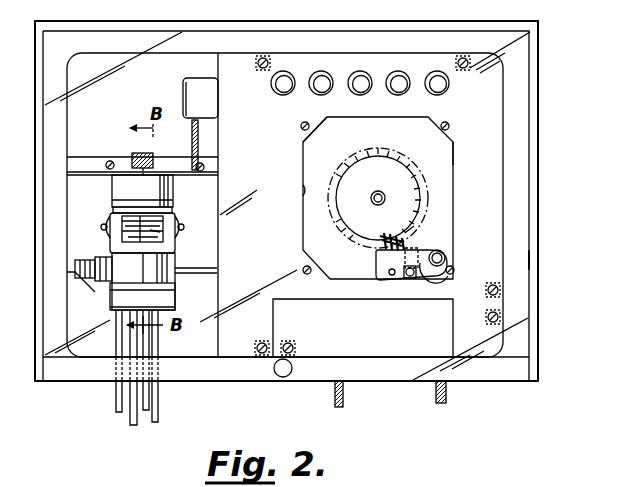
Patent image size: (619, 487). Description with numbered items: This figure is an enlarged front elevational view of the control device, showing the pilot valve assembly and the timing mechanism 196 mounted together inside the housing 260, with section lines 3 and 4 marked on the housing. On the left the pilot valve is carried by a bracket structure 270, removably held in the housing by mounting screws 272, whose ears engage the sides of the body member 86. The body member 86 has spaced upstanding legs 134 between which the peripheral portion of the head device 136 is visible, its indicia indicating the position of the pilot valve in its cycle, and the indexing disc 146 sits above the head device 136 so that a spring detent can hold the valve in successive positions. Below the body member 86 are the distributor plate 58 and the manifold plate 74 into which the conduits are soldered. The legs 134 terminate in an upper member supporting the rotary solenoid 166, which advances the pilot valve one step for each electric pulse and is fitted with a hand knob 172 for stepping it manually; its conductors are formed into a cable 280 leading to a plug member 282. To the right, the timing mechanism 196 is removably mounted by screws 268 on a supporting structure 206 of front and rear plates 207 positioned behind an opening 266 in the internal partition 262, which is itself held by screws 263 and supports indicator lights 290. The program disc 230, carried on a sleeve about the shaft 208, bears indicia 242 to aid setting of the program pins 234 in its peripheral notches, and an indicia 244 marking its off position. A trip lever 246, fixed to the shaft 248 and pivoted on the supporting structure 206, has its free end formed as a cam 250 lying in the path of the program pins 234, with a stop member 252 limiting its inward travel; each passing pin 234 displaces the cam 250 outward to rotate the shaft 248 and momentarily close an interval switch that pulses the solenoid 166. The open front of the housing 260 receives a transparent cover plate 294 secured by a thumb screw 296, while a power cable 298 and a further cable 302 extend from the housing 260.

The section line 3- 3 is at (56, 63).
The section line 4- 4 is at (465, 42).
The distributor plate 58 is at (112, 290).
The manifold plate 74 is at (115, 305).
The body member 86 is at (168, 266).
The leg portions 134 is at (108, 238).
The head device 136 is at (160, 232).
The indexing disc 146 is at (110, 223).
The rotary solenoid device 166 is at (112, 186).
The hand knob 172 is at (140, 152).
The timing mechanism 196 is at (456, 153).
The supporting structure 206 is at (326, 140).
The front and rear plates 207 is at (303, 175).
The shaft 208 is at (378, 193).
The program disc 230 is at (372, 156).
The program pins 234 is at (410, 242).
The indicia 242 is at (414, 160).
The indicia 244 is at (380, 236).
The trip lever 246 is at (425, 276).
The shaft 248 is at (445, 258).
The cam 250 is at (377, 258).
The stop member 252 is at (420, 252).
The housing 260 is at (530, 260).
The internal partition 262 is at (222, 348).
The screws 263 is at (261, 67).
The opening 266 is at (296, 194).
The screws 268 is at (302, 123).
The bracket structure 270 is at (99, 212).
The mounting screws 272 is at (109, 160).
The cable 280 is at (192, 148).
The plug member 282 is at (200, 100).
The indicator lights 290 is at (397, 72).
The transparent cover plate 294 is at (190, 372).
The thumb screw 296 is at (276, 374).
The cable 298 is at (334, 394).
The cable 302 is at (435, 392).